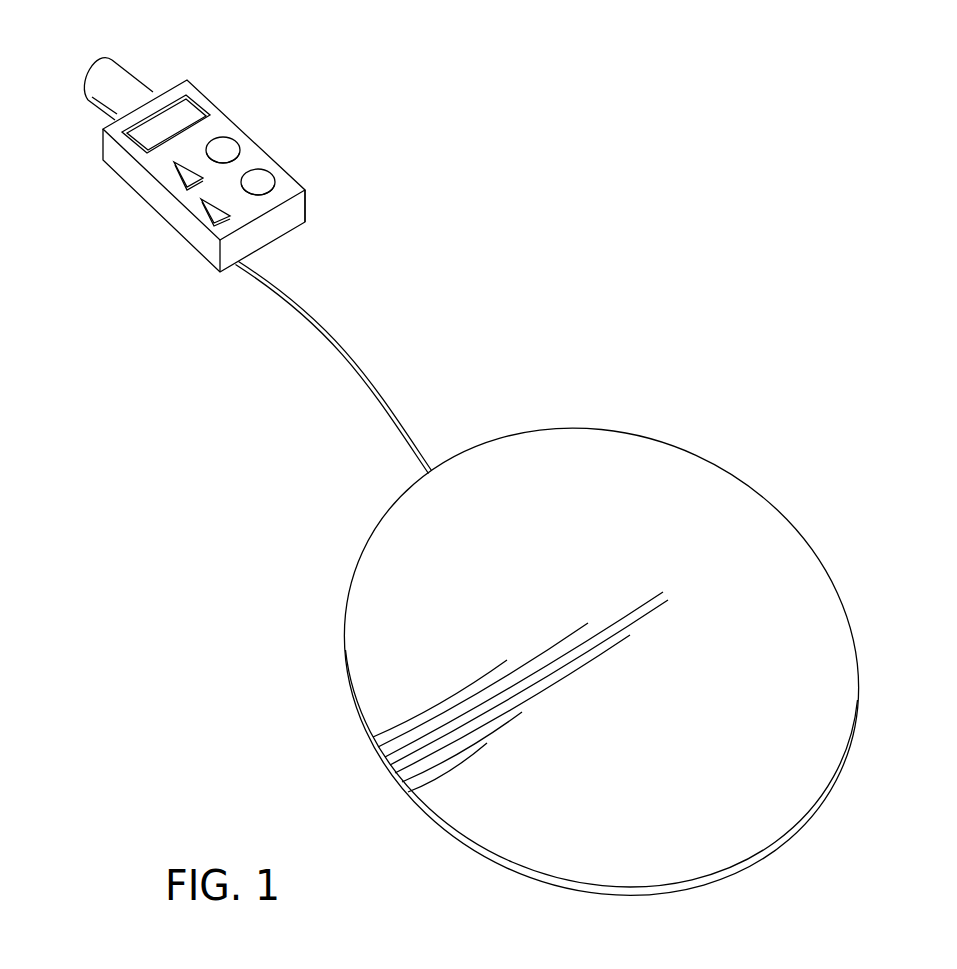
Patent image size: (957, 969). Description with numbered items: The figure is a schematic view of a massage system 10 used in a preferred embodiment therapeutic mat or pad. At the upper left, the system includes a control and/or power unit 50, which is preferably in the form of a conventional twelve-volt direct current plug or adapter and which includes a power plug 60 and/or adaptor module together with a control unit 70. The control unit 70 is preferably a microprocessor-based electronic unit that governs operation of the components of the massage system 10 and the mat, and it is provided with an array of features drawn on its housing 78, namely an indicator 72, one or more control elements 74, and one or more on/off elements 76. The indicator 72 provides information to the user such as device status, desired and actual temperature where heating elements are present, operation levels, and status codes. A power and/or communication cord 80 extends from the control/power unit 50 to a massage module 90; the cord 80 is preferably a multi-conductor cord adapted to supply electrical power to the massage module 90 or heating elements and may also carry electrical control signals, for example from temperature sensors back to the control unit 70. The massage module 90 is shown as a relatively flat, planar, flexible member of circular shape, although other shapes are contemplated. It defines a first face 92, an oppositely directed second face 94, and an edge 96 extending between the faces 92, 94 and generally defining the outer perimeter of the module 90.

The massage system 10 is at (668, 218).
The control and/or power unit 50 is at (210, 48).
The power plug 60 is at (111, 92).
The control unit 70 is at (147, 173).
The indicator 72 is at (142, 138).
The control elements 74 is at (178, 165).
The on/off elements 76 is at (262, 183).
The housing 78 is at (298, 210).
The power and/or communication cord 80 is at (284, 292).
The massage module 90 is at (607, 657).
The first face 92 is at (780, 615).
The second face 94 is at (860, 683).
The edge 96 is at (502, 863).